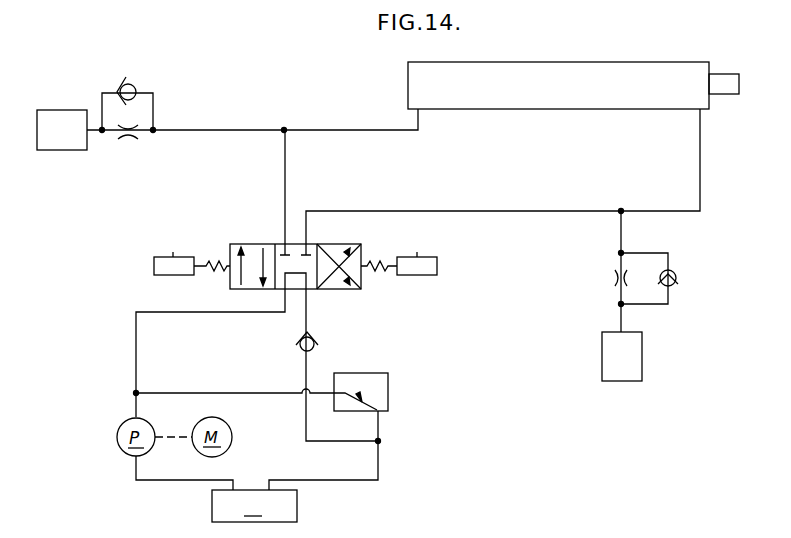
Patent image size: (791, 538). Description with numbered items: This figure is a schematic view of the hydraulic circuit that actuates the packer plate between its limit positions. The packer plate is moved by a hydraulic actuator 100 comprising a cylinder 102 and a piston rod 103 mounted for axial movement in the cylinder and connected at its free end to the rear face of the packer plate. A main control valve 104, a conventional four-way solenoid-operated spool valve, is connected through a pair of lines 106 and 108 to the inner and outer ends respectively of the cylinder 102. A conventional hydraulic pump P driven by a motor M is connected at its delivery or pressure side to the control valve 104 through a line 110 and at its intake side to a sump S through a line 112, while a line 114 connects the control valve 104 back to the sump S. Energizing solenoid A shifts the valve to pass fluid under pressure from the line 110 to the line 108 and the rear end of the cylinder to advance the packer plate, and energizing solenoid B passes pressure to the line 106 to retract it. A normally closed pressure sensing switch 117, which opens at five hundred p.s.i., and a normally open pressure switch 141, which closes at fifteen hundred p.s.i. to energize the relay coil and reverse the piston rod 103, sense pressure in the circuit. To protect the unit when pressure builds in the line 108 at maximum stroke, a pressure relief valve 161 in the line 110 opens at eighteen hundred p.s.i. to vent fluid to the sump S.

The hydraulic actuator 100 is at (537, 62).
The cylinder 102 is at (516, 104).
The piston rod 103 is at (728, 79).
The main control valve 104 is at (250, 244).
The line 106 is at (520, 212).
The line 108 is at (315, 181).
The line 110 is at (136, 352).
The line 112 is at (196, 482).
The line 114 is at (304, 366).
The pressure sensing switch 117 is at (602, 362).
The pressure switch 141 is at (57, 110).
The pressure relief valve 161 is at (388, 389).